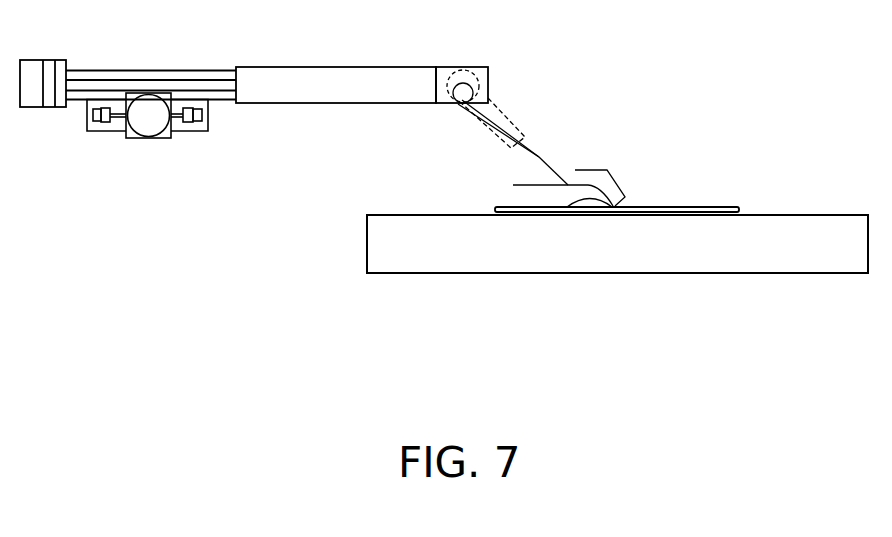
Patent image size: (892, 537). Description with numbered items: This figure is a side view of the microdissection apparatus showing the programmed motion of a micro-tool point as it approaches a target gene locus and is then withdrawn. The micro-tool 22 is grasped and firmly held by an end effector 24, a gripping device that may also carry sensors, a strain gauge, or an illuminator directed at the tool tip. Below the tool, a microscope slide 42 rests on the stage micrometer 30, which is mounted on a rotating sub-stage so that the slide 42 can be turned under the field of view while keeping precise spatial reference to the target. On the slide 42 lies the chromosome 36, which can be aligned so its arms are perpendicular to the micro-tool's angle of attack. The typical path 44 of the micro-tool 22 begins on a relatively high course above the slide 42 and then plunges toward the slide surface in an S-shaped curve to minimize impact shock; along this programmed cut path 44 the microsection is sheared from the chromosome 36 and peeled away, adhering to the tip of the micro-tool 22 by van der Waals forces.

The micro-tool 22 is at (538, 157).
The end effector 24 is at (490, 98).
The stage micrometer 30 is at (732, 263).
The chromosome 36 is at (563, 207).
The microscope slide 42 is at (715, 203).
The path 44 is at (592, 163).